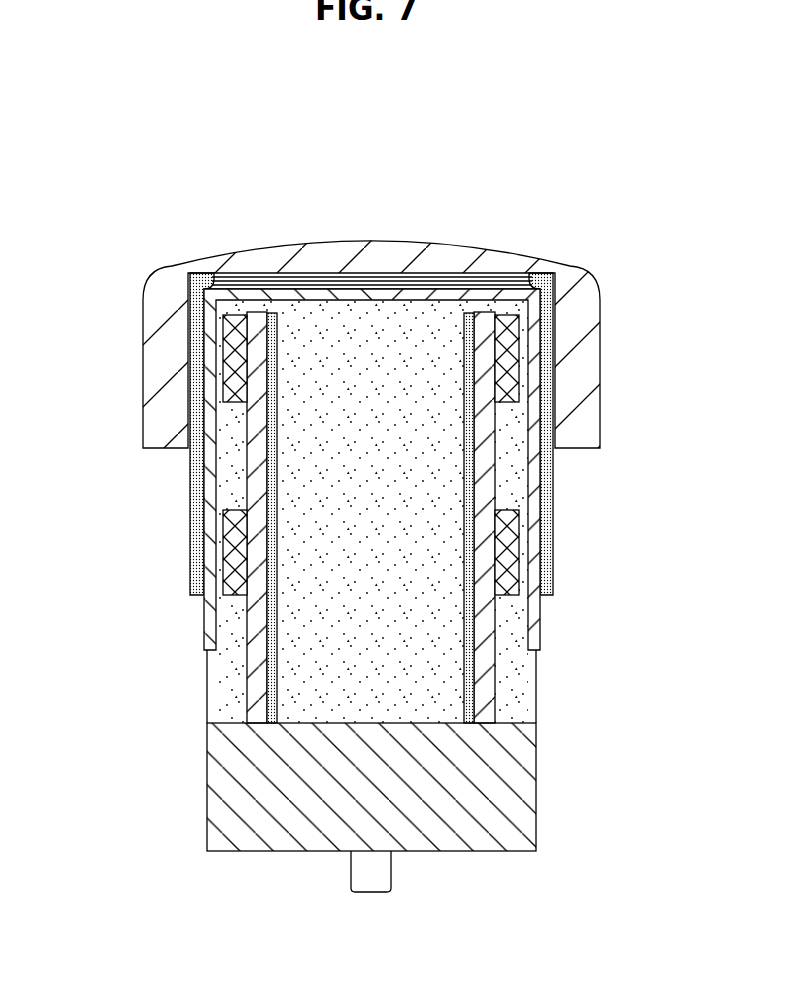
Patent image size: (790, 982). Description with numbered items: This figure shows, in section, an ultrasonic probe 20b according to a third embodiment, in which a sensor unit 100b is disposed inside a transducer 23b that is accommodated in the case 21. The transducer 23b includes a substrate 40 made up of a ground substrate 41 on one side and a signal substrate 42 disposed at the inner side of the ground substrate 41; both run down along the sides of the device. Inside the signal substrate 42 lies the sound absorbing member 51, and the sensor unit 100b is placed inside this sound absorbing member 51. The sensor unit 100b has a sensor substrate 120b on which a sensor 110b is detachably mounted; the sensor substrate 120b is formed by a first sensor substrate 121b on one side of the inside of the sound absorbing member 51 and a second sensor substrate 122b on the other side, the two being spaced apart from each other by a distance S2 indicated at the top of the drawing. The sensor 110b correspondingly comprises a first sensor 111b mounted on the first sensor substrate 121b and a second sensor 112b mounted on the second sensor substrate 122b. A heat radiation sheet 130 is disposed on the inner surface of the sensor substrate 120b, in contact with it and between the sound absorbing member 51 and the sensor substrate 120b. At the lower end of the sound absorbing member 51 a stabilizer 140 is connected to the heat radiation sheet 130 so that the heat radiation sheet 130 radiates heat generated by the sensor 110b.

The secondary battery 20b is at (91, 150).
The distance S2 is at (476, 313).
The case 21 is at (143, 337).
The transducer 23b is at (519, 274).
The heat radiation sheet 130 is at (272, 312).
The first sensor 111b is at (242, 514).
The sensor 110b is at (378, 455).
The first sensor substrate 121b is at (257, 560).
The sensor substrate 120b is at (383, 517).
The second sensor 112b is at (516, 513).
The second sensor substrate 122b is at (488, 684).
The substrate 40 is at (608, 551).
The ground substrate 41 is at (550, 541).
The signal substrate 42 is at (532, 620).
The sound absorbing member 51 is at (226, 661).
The sensor unit 100b is at (497, 702).
The stabilizer 140 is at (218, 771).